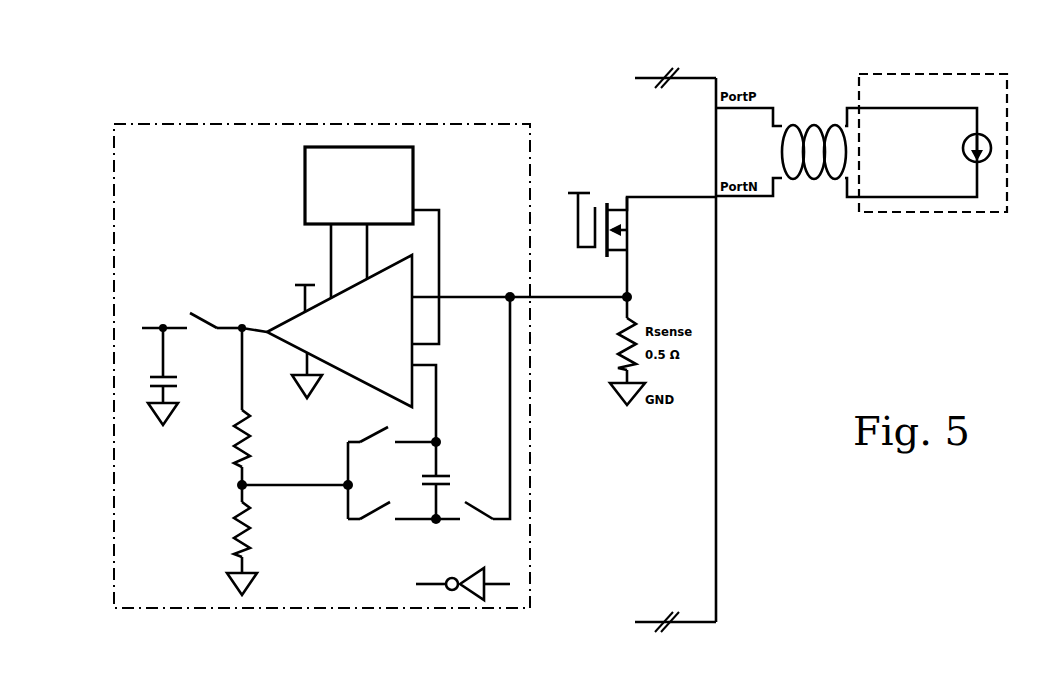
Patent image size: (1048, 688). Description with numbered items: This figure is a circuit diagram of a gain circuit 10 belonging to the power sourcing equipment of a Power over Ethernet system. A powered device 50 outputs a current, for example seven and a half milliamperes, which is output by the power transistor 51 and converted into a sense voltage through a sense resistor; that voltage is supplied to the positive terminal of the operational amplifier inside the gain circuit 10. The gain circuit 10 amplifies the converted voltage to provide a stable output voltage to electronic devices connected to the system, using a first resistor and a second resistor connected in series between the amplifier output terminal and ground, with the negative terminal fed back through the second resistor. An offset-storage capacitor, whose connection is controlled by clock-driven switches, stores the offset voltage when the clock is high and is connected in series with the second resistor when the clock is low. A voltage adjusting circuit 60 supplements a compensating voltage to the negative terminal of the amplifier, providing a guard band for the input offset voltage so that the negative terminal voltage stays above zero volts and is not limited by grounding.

The gain circuit 10 is at (370, 402).
The powered device 50 is at (953, 143).
The power transistor 51 is at (634, 232).
The voltage adjusting circuit 60 is at (359, 185).